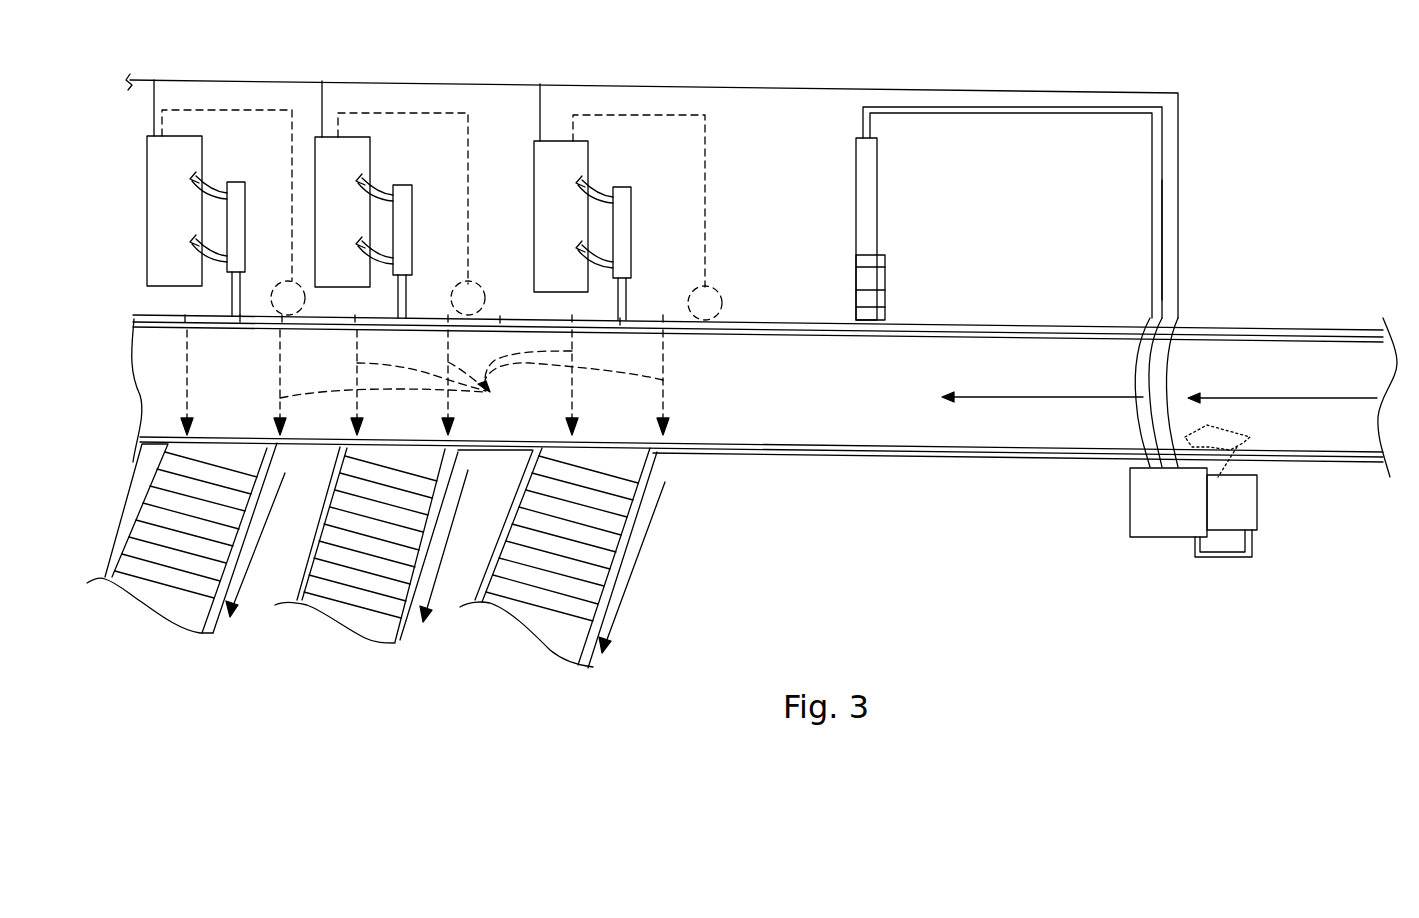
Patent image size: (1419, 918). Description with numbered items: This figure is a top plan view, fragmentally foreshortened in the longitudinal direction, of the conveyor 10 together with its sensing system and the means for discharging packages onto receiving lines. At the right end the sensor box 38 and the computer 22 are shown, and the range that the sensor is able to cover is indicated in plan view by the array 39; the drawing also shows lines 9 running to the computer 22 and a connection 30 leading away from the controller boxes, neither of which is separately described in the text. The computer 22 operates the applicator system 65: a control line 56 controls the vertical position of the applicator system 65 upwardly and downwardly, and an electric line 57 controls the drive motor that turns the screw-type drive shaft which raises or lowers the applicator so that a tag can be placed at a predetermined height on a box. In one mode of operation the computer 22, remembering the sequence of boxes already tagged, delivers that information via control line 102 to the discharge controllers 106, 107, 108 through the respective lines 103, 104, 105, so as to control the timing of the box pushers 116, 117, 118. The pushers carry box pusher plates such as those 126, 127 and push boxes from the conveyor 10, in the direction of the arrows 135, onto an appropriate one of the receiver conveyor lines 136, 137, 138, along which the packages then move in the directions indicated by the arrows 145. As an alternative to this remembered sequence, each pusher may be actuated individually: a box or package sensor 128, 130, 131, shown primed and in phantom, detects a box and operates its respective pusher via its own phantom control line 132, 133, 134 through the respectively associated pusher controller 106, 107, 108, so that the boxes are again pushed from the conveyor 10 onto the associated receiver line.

The conduit lines to controller 9 is at (1128, 393).
The conveyor 10 is at (1333, 358).
The computer 22 is at (1168, 502).
The connection to further apparatus 30 is at (1252, 557).
The sensor box 38 is at (1232, 502).
The array 39 is at (1217, 433).
The control line 56 is at (1162, 207).
The electric line 57 is at (1150, 130).
The applicator system 65 is at (860, 182).
The control line 102 is at (1178, 168).
The line 103 is at (542, 113).
The line 104 is at (327, 105).
The line 105 is at (154, 95).
The discharge controller 106 is at (538, 202).
The discharge controller 107 is at (325, 155).
The discharge controller 108 is at (202, 152).
The box pusher 116 is at (631, 202).
The box pusher 117 is at (412, 202).
The box pusher 118 is at (245, 201).
The box pusher plate 126 is at (390, 313).
The box pusher plate 127 is at (227, 315).
The box or package sensor 128 is at (787, 253).
The box or package sensor 130 is at (530, 249).
The box or package sensor 131 is at (291, 243).
The control line 132 is at (663, 115).
The control line 133 is at (445, 113).
The control line 134 is at (238, 100).
The arrows 135 is at (425, 382).
The receiver conveyor line 136 is at (633, 527).
The receiver conveyor line 137 is at (395, 642).
The receiver conveyor line 138 is at (213, 633).
The arrows 145 is at (245, 577).